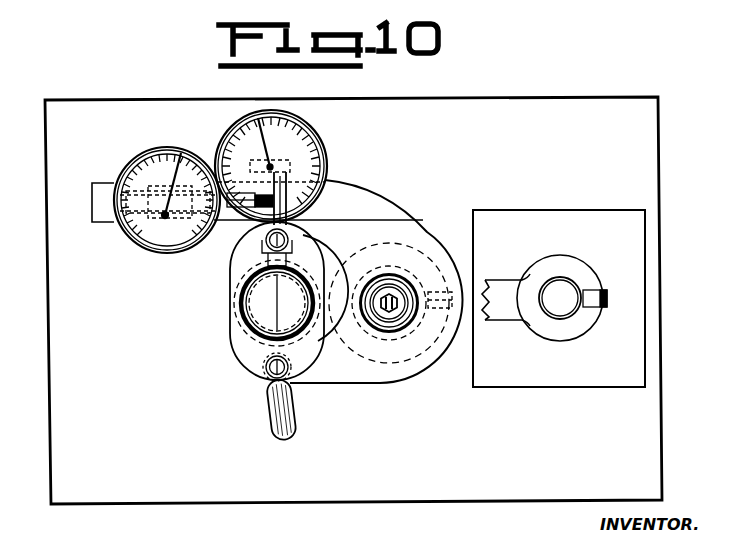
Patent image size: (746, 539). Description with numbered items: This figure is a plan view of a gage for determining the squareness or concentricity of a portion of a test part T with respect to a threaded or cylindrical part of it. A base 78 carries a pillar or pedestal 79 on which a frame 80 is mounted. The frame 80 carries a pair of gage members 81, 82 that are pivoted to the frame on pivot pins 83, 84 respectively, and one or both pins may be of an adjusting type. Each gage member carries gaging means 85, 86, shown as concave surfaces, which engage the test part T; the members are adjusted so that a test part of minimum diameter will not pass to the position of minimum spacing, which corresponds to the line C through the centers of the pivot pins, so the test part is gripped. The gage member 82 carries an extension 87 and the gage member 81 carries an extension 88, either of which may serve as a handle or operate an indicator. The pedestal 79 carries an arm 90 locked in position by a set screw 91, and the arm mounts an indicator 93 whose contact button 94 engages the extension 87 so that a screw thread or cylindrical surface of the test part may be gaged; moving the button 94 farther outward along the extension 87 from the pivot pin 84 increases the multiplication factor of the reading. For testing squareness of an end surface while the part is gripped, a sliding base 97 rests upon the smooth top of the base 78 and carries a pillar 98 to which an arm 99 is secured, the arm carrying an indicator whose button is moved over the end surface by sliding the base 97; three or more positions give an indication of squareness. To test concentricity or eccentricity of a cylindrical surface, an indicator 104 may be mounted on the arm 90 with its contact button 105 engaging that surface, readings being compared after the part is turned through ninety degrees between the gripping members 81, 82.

The base 78 is at (392, 500).
The pillar or pedestal 79 is at (403, 333).
The frame 80 is at (352, 375).
The gage member 81 is at (247, 363).
The gage member 82 is at (237, 279).
The pivot pin 83 is at (270, 378).
The pivot pin 84 is at (290, 239).
The gaging means 85 is at (240, 333).
The gaging means 86 is at (236, 283).
The extension 87 is at (296, 197).
The extension 88 is at (297, 422).
The arm 90 is at (108, 217).
The set screw 91 is at (446, 290).
The indicator 93 is at (136, 160).
The contact button 94 is at (282, 212).
The sliding base 97 is at (640, 350).
The pillar 98 is at (565, 283).
The arm 99 is at (564, 335).
The indicator 104 is at (318, 133).
The contact button 105 is at (245, 265).
The test part T is at (247, 309).
The line through pivot centers C is at (283, 432).